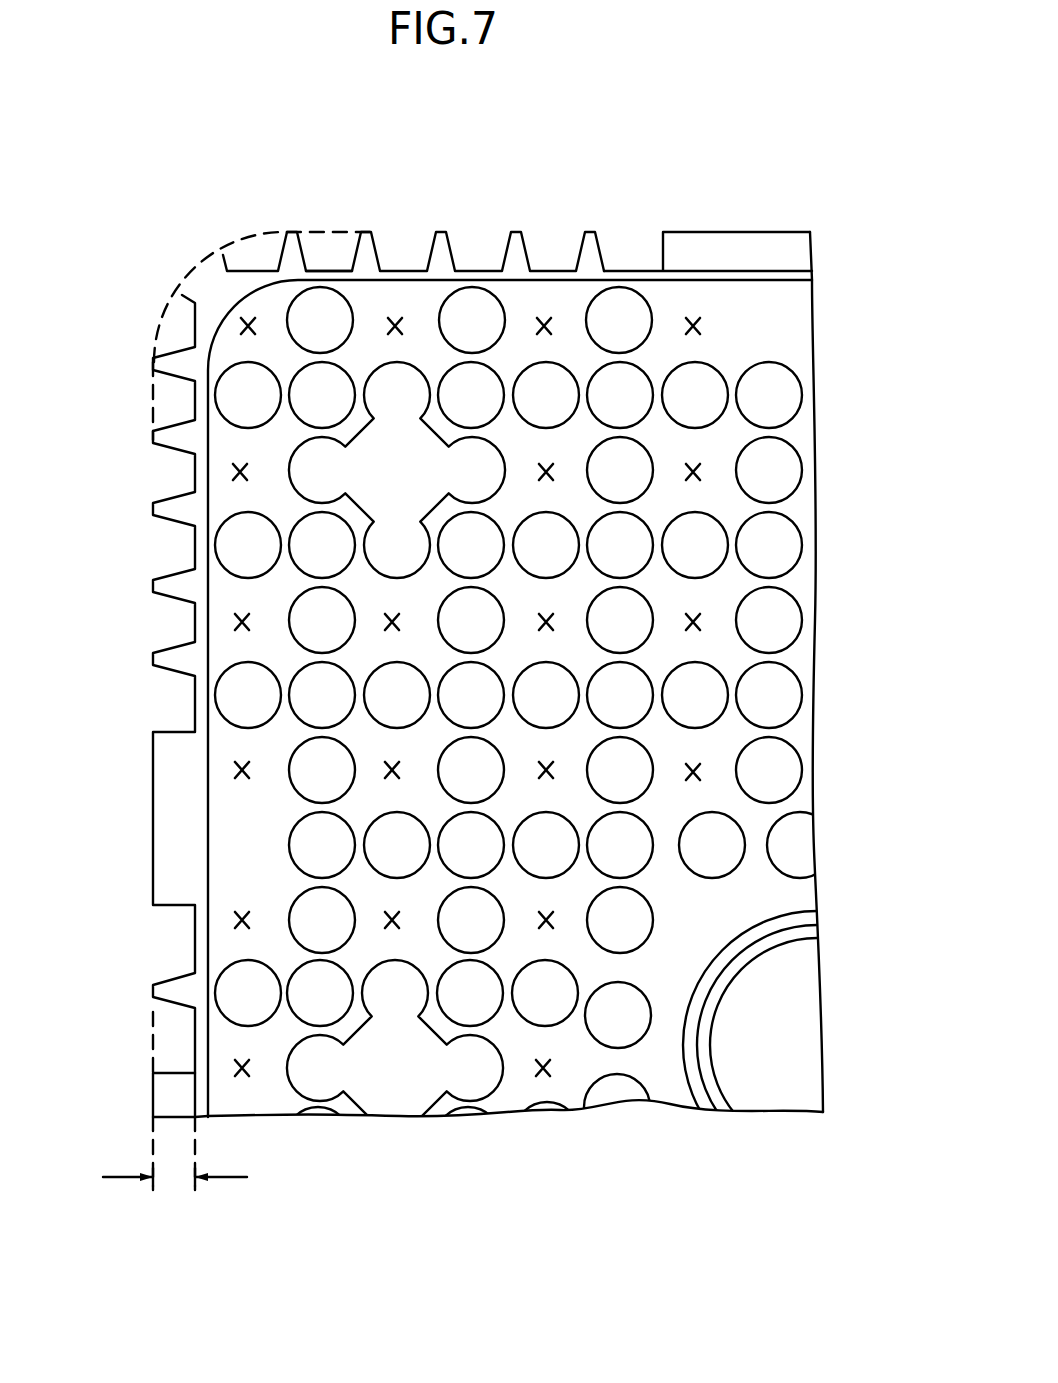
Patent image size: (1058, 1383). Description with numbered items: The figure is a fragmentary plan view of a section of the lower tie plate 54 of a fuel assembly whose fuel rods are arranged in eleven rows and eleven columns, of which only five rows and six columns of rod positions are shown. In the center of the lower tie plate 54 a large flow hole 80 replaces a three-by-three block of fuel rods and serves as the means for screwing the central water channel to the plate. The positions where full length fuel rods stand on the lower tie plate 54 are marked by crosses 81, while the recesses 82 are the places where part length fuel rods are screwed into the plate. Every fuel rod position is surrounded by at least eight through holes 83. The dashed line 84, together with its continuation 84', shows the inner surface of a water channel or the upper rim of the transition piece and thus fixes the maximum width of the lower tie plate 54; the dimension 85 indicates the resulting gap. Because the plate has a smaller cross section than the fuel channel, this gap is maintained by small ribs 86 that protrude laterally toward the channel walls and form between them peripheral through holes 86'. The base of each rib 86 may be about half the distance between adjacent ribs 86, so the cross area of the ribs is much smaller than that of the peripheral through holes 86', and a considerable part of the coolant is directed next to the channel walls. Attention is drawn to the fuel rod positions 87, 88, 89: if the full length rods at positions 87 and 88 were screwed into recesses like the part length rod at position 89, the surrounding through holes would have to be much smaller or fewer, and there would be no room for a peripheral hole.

The lower tie plate 54 is at (710, 200).
The large flow hole 80 is at (790, 988).
The crosses 81 is at (694, 773).
The recesses 82 is at (307, 487).
The through holes 83 is at (778, 683).
The dashed line 84 is at (262, 294).
The lower phantom edge of plate 84' is at (122, 1101).
The tooth depth dimension 85 is at (172, 1180).
The ribs 86 is at (413, 214).
The peripheral through holes 86' is at (329, 209).
The fuel rod position 87 is at (238, 472).
The fuel rod position 88 is at (395, 320).
The fuel rod position 89 is at (400, 622).